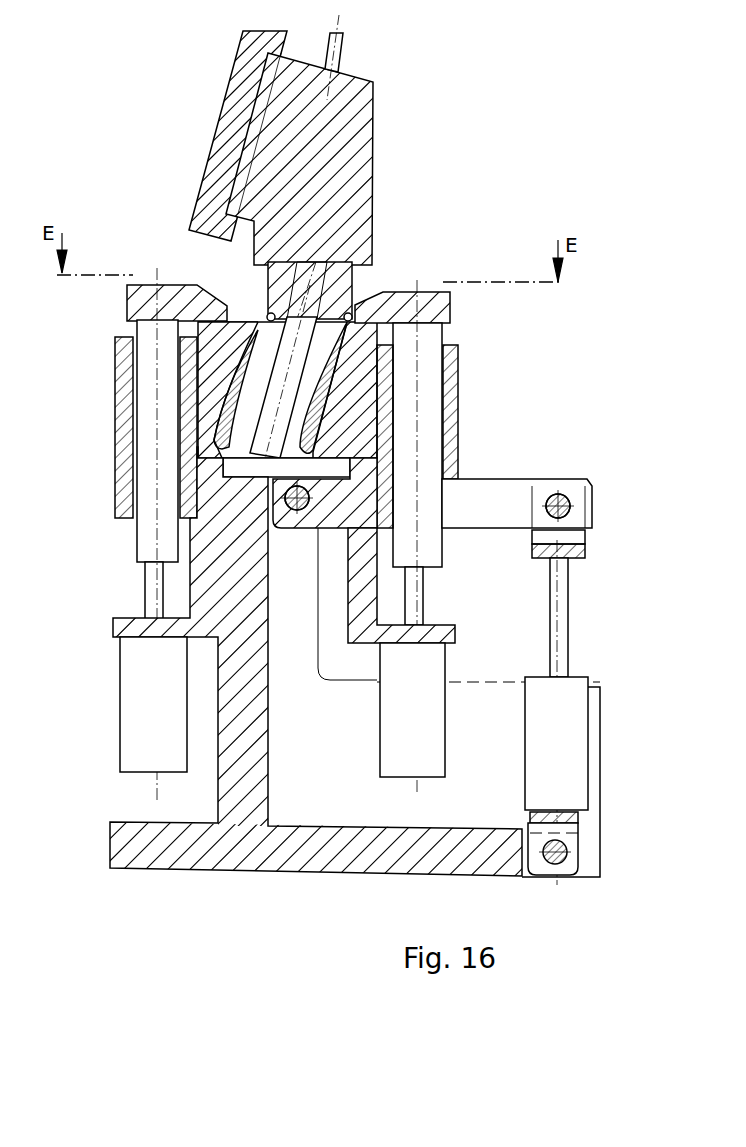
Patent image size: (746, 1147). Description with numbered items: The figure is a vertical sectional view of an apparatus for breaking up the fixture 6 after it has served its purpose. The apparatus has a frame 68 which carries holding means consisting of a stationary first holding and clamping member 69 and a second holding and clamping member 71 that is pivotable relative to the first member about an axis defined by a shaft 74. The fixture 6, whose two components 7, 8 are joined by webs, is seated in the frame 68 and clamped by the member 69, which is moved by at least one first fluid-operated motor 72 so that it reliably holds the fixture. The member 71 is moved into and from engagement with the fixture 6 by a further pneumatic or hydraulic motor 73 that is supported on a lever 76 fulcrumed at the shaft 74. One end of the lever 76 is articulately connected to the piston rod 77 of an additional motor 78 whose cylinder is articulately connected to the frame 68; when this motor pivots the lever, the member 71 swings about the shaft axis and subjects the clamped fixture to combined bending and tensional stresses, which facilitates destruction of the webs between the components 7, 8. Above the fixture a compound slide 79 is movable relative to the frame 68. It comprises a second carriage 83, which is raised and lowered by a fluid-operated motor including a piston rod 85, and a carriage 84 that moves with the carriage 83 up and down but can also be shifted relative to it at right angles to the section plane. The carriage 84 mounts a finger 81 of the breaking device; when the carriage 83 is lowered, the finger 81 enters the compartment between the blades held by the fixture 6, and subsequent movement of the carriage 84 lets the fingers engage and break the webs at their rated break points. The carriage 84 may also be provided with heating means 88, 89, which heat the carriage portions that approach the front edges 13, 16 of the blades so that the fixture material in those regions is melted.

The fixture 6 is at (388, 423).
The component of the fixture 7 is at (215, 372).
The component of the fixture 8 is at (358, 405).
The front edge of the blade 13 is at (253, 322).
The front edge of the blade 16 is at (393, 333).
The frame 68 is at (165, 868).
The first holding and clamping member 69 is at (132, 300).
The second holding and clamping member 71 is at (435, 309).
The first fluid-operated motor 72 is at (138, 688).
The further fluid-operated motor 73 is at (437, 670).
The shaft 74 is at (310, 502).
The lever 76 is at (508, 490).
The piston rod 77 is at (563, 598).
The additional fluid-operated motor 78 is at (573, 715).
The compound slide 79 is at (412, 127).
The finger 81 is at (287, 384).
The second carriage 83 is at (365, 160).
The carriage 84 is at (350, 277).
The piston rod 85 is at (347, 45).
The heating means 88 is at (266, 314).
The heating means 89 is at (350, 295).